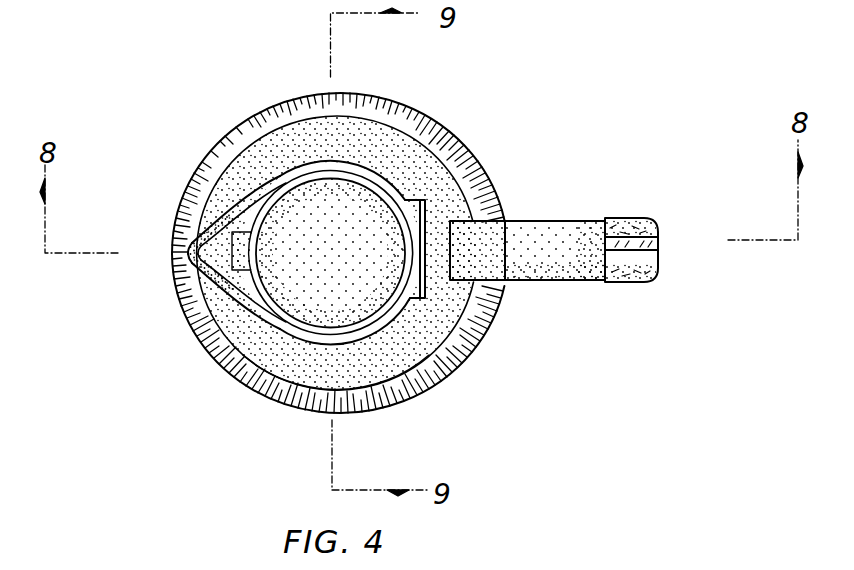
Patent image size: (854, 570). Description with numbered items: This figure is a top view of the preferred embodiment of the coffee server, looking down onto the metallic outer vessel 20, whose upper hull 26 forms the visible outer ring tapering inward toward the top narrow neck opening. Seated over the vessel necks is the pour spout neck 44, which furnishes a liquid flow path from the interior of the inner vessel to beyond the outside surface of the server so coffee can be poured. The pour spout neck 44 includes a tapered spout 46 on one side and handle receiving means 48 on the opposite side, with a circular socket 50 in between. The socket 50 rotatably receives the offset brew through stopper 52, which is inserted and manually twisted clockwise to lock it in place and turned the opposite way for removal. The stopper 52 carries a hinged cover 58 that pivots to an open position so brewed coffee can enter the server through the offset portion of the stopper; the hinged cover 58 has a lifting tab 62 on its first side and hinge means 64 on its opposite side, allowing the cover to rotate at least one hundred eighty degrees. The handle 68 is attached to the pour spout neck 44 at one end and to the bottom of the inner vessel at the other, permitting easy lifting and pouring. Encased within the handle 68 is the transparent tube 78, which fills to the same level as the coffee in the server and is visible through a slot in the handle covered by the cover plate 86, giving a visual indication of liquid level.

The outer vessel 20 is at (433, 390).
The upper hull 26 is at (388, 110).
The pour spout neck 44 is at (309, 158).
The tapered spout 46 is at (186, 282).
The handle receiving means 48 is at (505, 221).
The socket 50 is at (336, 415).
The offset brew through stopper 52 is at (302, 314).
The hinged cover 58 is at (270, 194).
The lifting tab 62 is at (200, 238).
The hinge means 64 is at (446, 296).
The handle 68 is at (563, 220).
The transparent tube 78 is at (660, 248).
The cover plate 86 is at (658, 240).